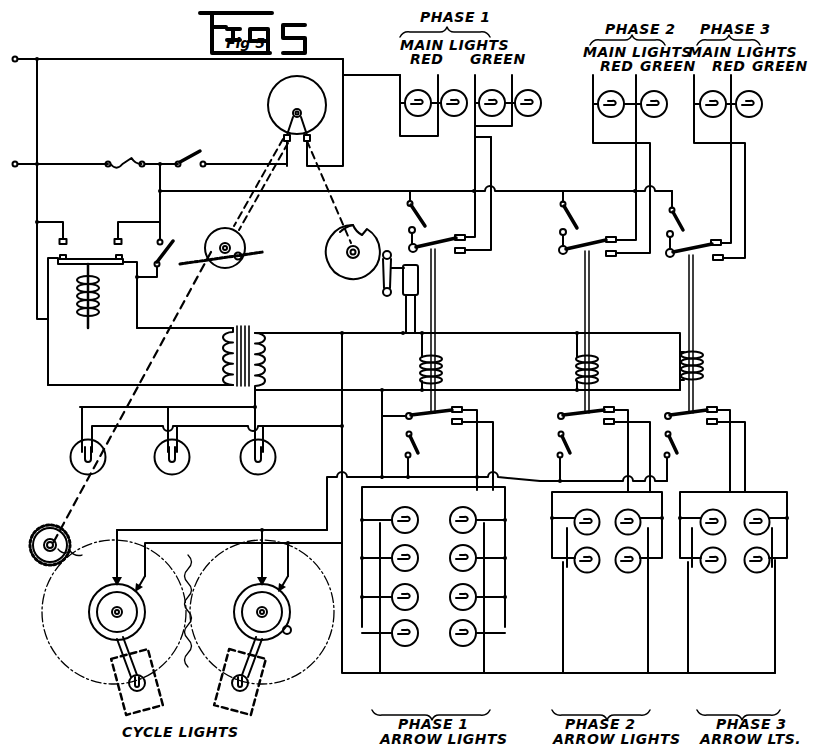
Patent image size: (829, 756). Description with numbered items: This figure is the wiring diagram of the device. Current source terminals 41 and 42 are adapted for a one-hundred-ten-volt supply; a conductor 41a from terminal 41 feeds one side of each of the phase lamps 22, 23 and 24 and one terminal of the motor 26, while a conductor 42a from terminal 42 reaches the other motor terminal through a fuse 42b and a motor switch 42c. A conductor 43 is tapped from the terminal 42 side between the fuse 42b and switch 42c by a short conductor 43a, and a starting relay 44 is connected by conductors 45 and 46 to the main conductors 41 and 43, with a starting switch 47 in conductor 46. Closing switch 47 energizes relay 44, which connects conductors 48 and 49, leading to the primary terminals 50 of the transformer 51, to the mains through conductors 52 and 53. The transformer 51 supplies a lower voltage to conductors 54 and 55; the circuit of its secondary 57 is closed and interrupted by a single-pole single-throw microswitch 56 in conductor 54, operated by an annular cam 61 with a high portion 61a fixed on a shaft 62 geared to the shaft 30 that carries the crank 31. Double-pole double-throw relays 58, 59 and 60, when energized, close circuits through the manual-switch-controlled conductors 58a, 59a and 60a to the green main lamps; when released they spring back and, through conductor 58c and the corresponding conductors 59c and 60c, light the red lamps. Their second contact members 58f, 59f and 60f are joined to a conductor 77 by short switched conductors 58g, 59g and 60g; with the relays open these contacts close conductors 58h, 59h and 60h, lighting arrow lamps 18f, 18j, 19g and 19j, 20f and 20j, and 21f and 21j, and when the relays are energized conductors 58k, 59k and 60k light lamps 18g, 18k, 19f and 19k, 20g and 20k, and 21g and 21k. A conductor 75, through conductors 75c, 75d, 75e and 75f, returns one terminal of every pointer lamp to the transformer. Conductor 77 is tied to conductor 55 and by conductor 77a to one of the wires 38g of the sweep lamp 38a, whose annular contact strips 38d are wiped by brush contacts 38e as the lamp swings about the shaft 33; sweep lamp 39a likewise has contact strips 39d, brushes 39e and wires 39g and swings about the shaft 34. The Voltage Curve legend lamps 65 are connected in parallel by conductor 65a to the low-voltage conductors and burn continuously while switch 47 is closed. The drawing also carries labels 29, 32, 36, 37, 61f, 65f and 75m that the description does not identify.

The current source terminal 41 is at (22, 49).
The conductor 41a is at (153, 58).
The current source terminal 42 is at (57, 153).
The conductor 42a is at (57, 166).
The fuse 42b is at (133, 155).
The motor switch 42c is at (205, 157).
The conductor 43 is at (197, 191).
The short conductor 43a is at (160, 186).
The starting relay 44 is at (88, 258).
The conductor 45 is at (38, 187).
The conductor 46 is at (162, 240).
The starting switch 47 is at (152, 248).
The conductor 48 is at (37, 268).
The conductor 49 is at (147, 330).
The primary terminals 50 is at (215, 358).
The transformer 51 is at (243, 326).
The conductor 52 is at (55, 220).
The conductor 53 is at (140, 218).
The low voltage conductor 54 is at (538, 336).
The low voltage conductor 55 is at (528, 393).
The microswitch 56 is at (421, 278).
The transformer secondary 57 is at (270, 358).
The double pole double throw relay 58 is at (444, 364).
The manual switch controlled conductor 58a is at (408, 233).
The conductor 58c is at (493, 167).
The second pole contact member 58f is at (472, 169).
The short conductor 58g is at (420, 446).
The conductor 58h is at (476, 469).
The conductor 58k is at (494, 437).
The double pole double throw relay 59 is at (575, 362).
The manual switch controlled conductor 59a is at (560, 231).
The conductor 59c is at (652, 172).
The second pole contact member 59f is at (634, 172).
The short conductor 59g is at (566, 445).
The conductor 59h is at (627, 466).
The conductor 59k is at (648, 428).
The double pole double throw relay 60 is at (681, 362).
The manual switch controlled conductor 60a is at (669, 259).
The conductor 60c is at (747, 189).
The second pole contact member 60f is at (729, 189).
The short conductor 60g is at (675, 445).
The conductor 60h is at (729, 468).
The conductor 60k is at (747, 430).
The annular cam 61 is at (335, 272).
The high portion of cam 61a is at (381, 289).
The cam lobe 61f is at (330, 262).
The shaft 62 is at (324, 221).
The motor 26 is at (313, 92).
The shaft 30 is at (232, 272).
The crank 31 is at (250, 256).
The roller 32 is at (240, 262).
The gear 29 is at (36, 563).
The shaft 33 is at (123, 612).
The shaft 34 is at (256, 612).
The cycle dial 36 is at (80, 671).
The cycle dial 37 is at (290, 675).
The sweep lamp 38a is at (147, 690).
The annular contact strips 38d is at (98, 627).
The brush contacts 38e is at (114, 576).
The conduit wires 38g is at (173, 528).
The sweep lamp 39a is at (246, 691).
The annular contact strips 39d is at (291, 632).
The brush contacts 39e is at (259, 576).
The conduit wires 39g is at (223, 534).
The voltage curve legend lamps 65 is at (169, 478).
The conductor 65a is at (78, 409).
The conductor 65f is at (108, 429).
The electrical conductor 75 is at (344, 445).
The conductor 75c is at (565, 649).
The conductor 75d is at (650, 645).
The conductor 75e is at (690, 649).
The conductor 75f is at (486, 655).
The conductor 75m is at (383, 655).
The conductor 77 is at (344, 428).
The conductor 77a is at (325, 497).
The arrow lamp 18f is at (415, 512).
The arrow lamp 18g is at (483, 511).
The arrow lamp 18j is at (420, 546).
The arrow lamp 18k is at (465, 551).
The arrow lamp 19f is at (467, 590).
The arrow lamp 19g is at (420, 585).
The arrow lamp 19j is at (420, 621).
The arrow lamp 19k is at (452, 644).
The arrow lamp 20f is at (592, 533).
The arrow lamp 20g is at (620, 533).
The arrow lamp 20j is at (592, 572).
The arrow lamp 20k is at (622, 572).
The arrow lamp 21f is at (716, 533).
The arrow lamp 21g is at (752, 533).
The arrow lamp 21j is at (716, 572).
The arrow lamp 21k is at (752, 572).
The phase I lamps 22 is at (451, 116).
The phase II lamps 23 is at (642, 116).
The phase III lamps 24 is at (707, 117).